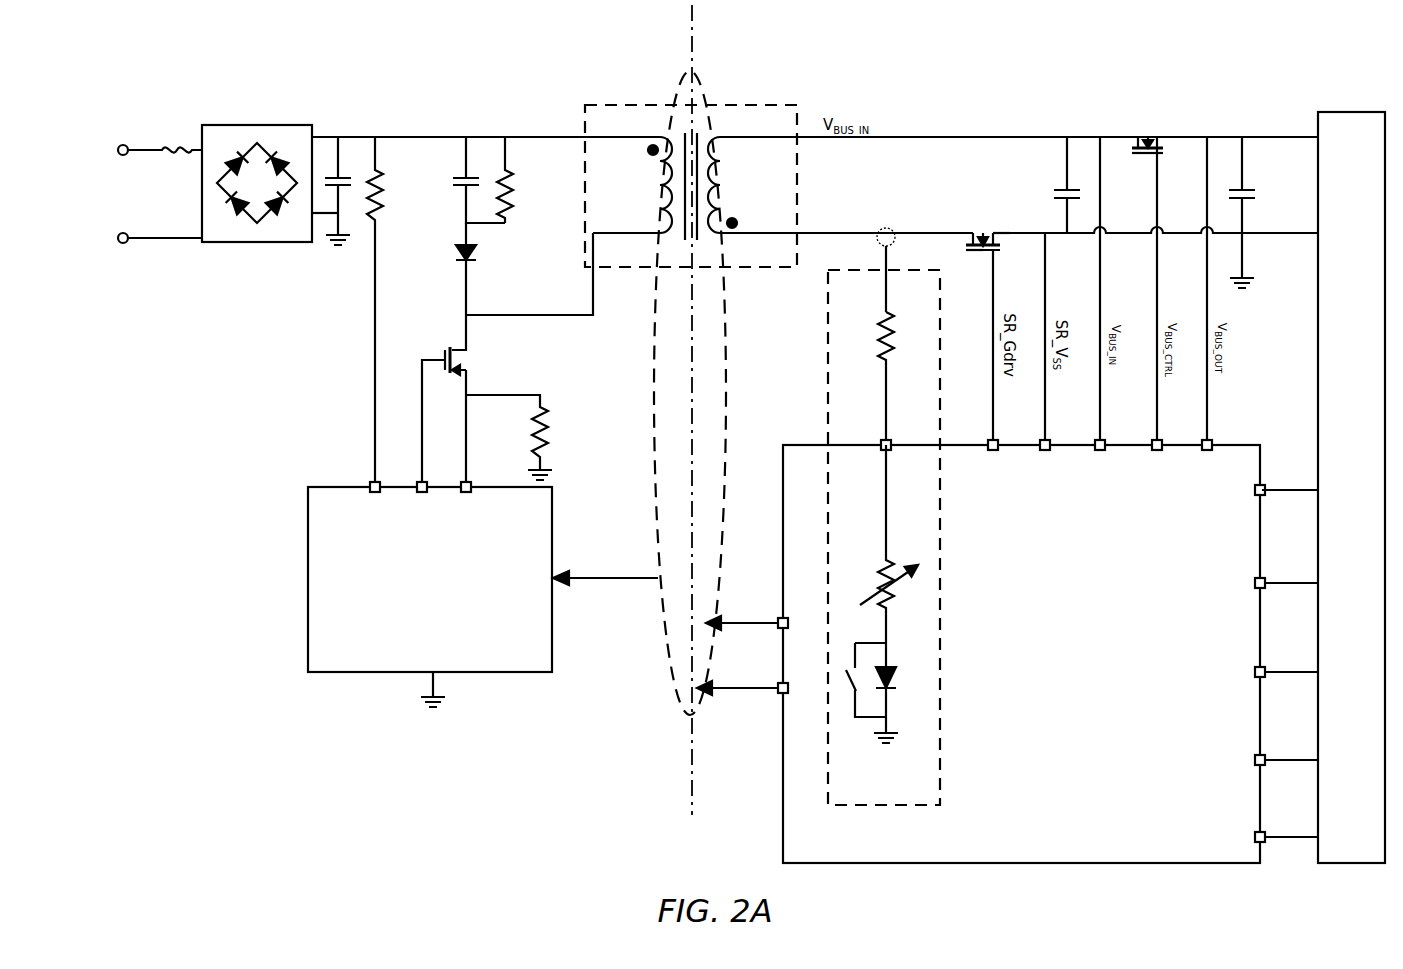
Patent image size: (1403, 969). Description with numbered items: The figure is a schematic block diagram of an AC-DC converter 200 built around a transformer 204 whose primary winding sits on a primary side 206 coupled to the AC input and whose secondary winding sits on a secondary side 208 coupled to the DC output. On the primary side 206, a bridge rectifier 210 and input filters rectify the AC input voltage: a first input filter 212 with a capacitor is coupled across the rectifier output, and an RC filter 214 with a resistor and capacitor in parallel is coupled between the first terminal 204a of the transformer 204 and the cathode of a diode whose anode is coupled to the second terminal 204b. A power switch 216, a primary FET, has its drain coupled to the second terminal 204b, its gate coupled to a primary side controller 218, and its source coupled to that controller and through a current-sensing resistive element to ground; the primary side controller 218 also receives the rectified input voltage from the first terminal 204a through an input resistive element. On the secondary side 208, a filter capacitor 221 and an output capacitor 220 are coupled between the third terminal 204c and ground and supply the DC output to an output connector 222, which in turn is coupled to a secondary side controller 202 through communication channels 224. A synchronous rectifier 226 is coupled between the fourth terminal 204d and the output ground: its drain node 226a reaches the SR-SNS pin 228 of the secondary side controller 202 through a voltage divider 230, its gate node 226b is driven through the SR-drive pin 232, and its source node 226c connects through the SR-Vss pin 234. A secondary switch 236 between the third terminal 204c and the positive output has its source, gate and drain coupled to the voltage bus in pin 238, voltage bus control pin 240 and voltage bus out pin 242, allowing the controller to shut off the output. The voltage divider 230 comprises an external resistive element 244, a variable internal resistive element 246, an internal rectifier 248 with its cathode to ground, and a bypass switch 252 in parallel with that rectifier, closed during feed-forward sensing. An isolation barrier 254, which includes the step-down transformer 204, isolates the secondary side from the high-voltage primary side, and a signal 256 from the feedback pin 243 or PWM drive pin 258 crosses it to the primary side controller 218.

The AC-DC converter 200 is at (188, 66).
The secondary side controller 202 is at (1058, 719).
The transformer 204 is at (586, 108).
The first terminal 204a is at (620, 137).
The second terminal 204b is at (621, 235).
The third terminal 204c is at (732, 137).
The fourth terminal 204d is at (729, 235).
The primary side 206 is at (430, 40).
The secondary side 208 is at (1075, 40).
The bridge rectifier 210 is at (257, 125).
The first input filter 212 is at (340, 125).
The RC filter 214 is at (485, 110).
The power switch 216 is at (432, 343).
The primary side controller 218 is at (415, 636).
The output capacitor 220 is at (1246, 188).
The filter capacitor 221 is at (1059, 188).
The output connector 222 is at (1341, 487).
The communication channels 224 is at (1283, 440).
The synchronous rectifier 226 is at (983, 220).
The drain node 226a is at (884, 226).
The gate node 226b is at (978, 254).
The source node 226c is at (1004, 233).
The SR-SNS pin 228 is at (880, 442).
The voltage divider 230 is at (858, 796).
The SR-drive pin 232 is at (990, 442).
The SR-Vss pin 234 is at (1042, 442).
The secondary switch 236 is at (1137, 172).
The voltage bus in pin 238 is at (1098, 442).
The voltage bus control pin 240 is at (1156, 442).
The voltage bus out pin 242 is at (1206, 442).
The feedback pin 243 is at (778, 694).
The external resistive element 244 is at (888, 313).
The internal resistive element 246 is at (880, 610).
The internal rectifier 248 is at (886, 668).
The switch 252 is at (837, 701).
The isolation barrier 254 is at (690, 410).
The signal 256 is at (623, 582).
The PWM drive pin 258 is at (780, 620).